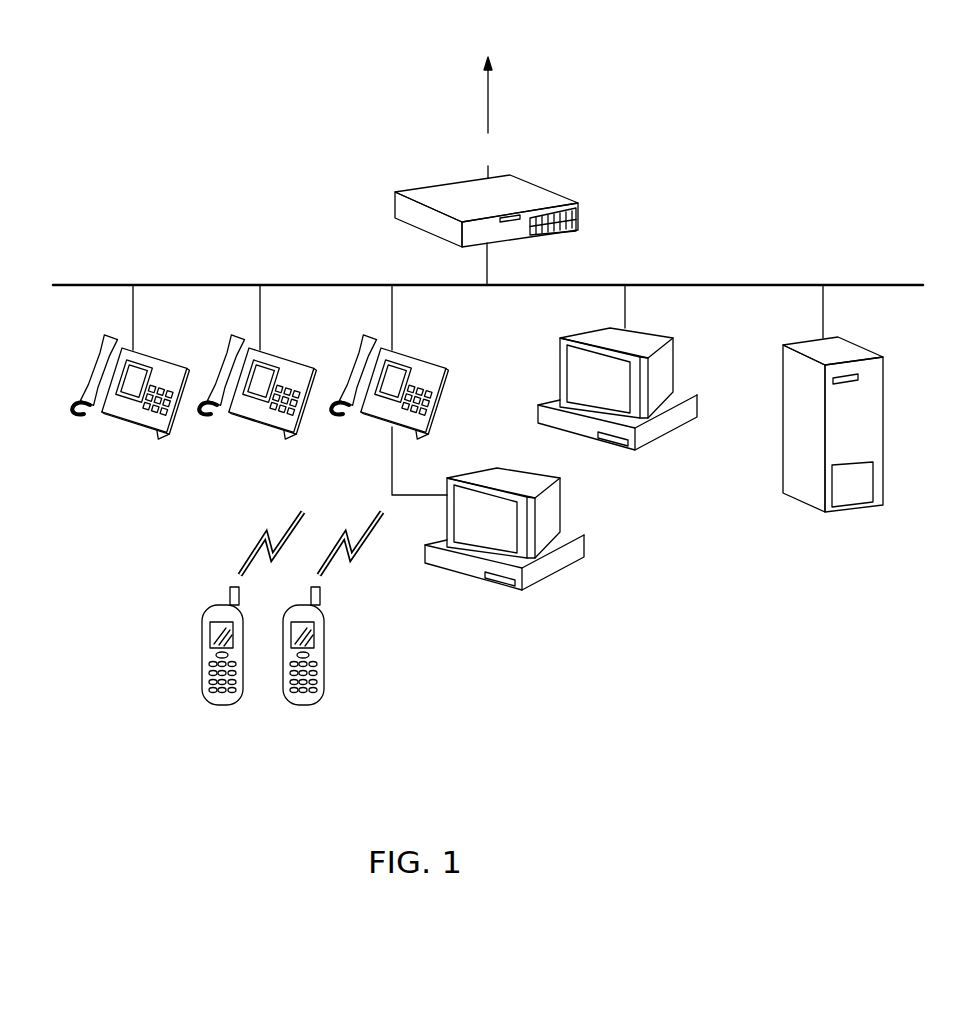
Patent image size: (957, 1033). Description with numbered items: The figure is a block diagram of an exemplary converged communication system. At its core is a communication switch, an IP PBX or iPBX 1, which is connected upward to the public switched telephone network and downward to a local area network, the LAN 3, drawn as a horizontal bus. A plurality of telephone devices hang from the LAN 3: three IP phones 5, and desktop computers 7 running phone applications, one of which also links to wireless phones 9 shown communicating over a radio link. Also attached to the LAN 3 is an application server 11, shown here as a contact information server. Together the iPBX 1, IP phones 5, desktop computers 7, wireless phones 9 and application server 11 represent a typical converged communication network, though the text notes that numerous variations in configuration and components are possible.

The iPBX 1 is at (535, 192).
The LAN 3 is at (850, 284).
The IP phones 5 is at (170, 370).
The desktop computers 7 is at (668, 352).
The wireless phones 9 is at (222, 705).
The application server 11 is at (873, 403).